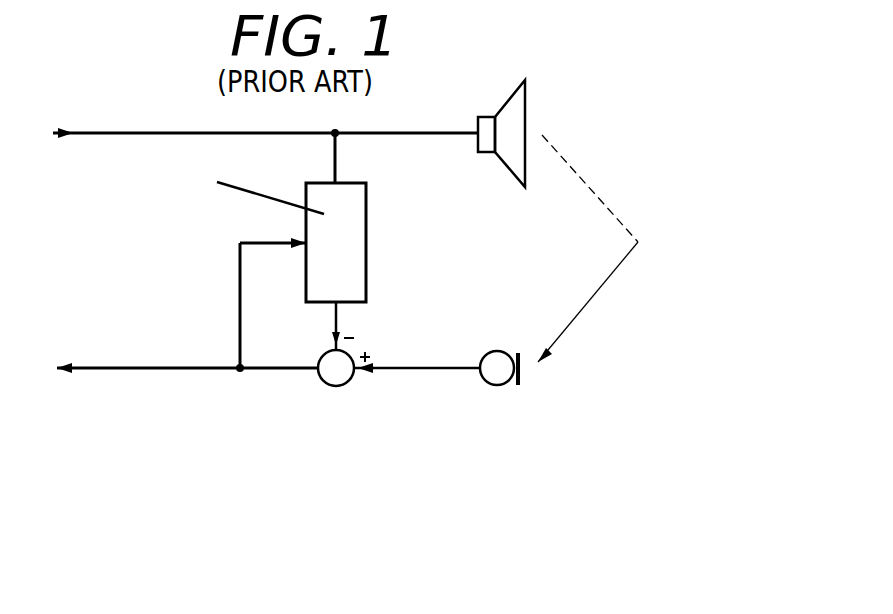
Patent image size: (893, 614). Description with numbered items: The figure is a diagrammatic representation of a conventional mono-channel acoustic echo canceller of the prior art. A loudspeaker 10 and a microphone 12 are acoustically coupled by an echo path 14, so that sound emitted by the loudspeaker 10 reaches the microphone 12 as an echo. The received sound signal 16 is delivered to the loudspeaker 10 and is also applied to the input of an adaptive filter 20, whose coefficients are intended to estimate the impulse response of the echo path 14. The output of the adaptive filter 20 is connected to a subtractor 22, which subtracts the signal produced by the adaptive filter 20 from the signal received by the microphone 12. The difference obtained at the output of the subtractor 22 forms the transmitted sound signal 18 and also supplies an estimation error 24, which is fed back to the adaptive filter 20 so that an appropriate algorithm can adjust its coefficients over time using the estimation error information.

The loudspeaker 10 is at (517, 94).
The microphone 12 is at (497, 380).
The echo path 14 is at (607, 205).
The received sound signal 16 is at (152, 133).
The transmitted sound signal 18 is at (131, 370).
The adaptive filter 20 is at (358, 232).
The subtractor 22 is at (340, 380).
The estimation error 24 is at (240, 297).